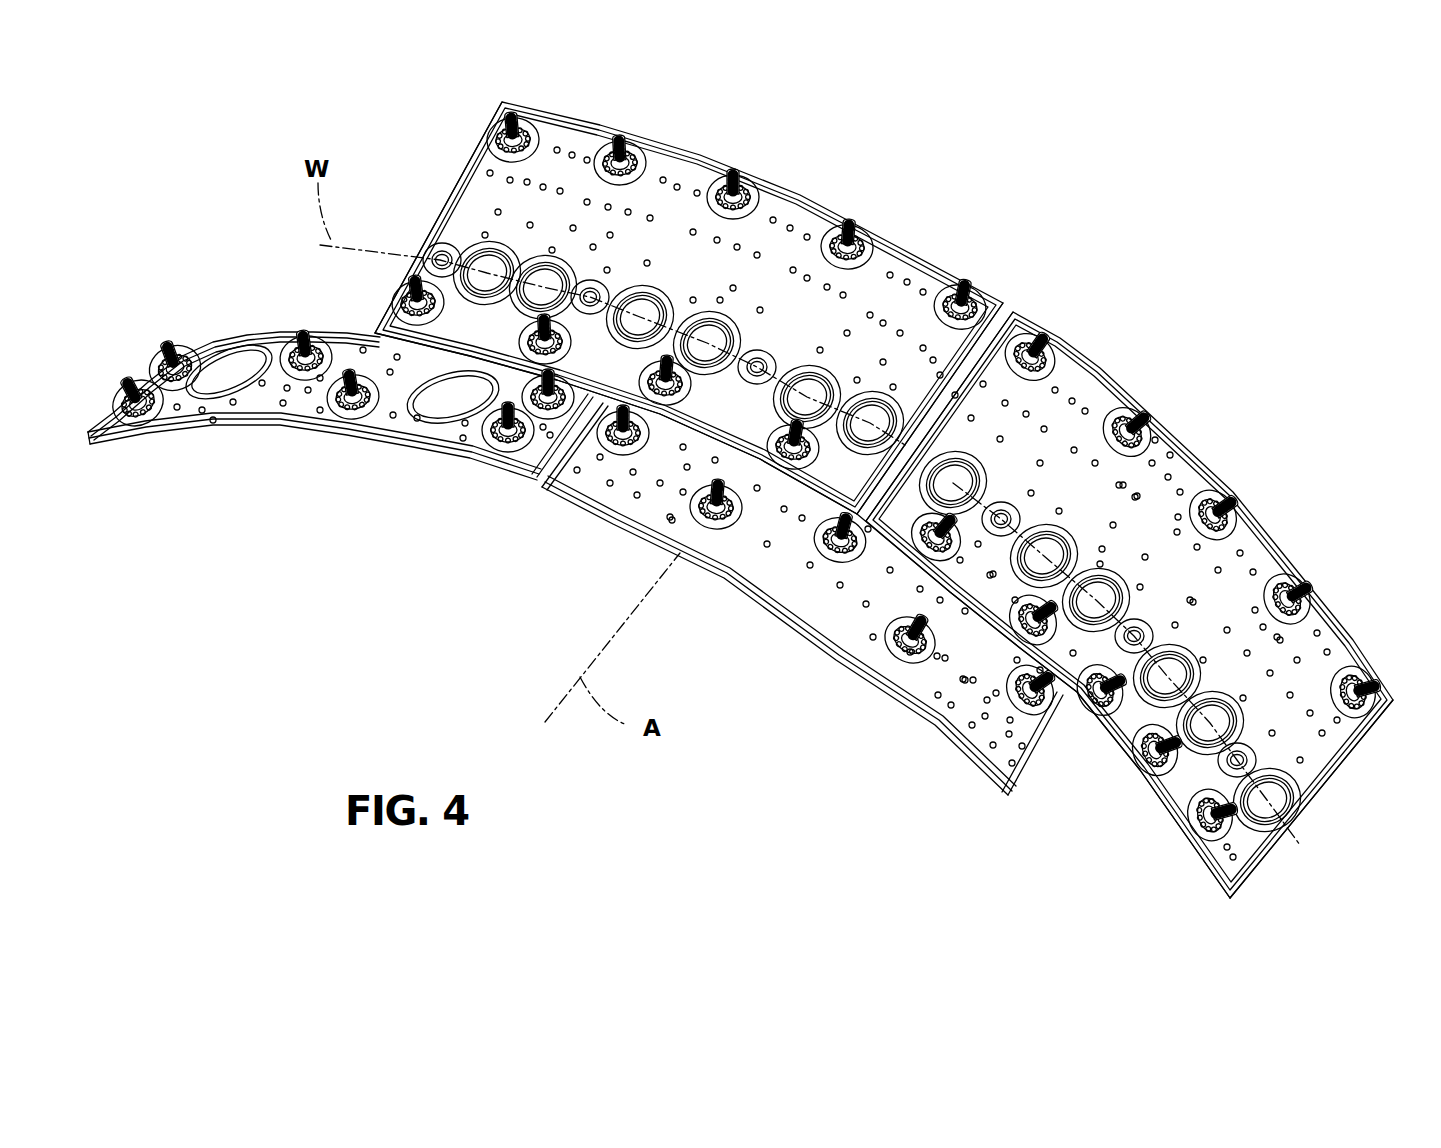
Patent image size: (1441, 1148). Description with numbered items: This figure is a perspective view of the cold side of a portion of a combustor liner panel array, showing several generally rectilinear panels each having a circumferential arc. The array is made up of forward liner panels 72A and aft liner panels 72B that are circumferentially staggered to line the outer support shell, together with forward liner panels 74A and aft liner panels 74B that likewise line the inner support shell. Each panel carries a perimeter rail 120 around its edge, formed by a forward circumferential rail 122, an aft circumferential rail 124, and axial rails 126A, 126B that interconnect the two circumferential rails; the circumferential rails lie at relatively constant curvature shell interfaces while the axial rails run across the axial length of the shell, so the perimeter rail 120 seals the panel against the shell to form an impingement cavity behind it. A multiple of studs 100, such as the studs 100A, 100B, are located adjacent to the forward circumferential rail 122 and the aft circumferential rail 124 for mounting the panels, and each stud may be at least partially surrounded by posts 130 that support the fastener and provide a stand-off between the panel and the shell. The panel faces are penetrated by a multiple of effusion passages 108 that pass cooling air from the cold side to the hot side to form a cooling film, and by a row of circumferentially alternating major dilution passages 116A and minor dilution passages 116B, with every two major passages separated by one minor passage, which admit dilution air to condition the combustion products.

The forward liner panel 72A is at (587, 613).
The forward liner panel 74A is at (587, 613).
The aft liner panel 72B is at (875, 498).
The aft liner panel 74B is at (875, 498).
The stud 100 is at (727, 553).
The stud 100A is at (1253, 835).
The stud 100B is at (1360, 690).
The effusion passage 108 is at (1165, 518).
The major dilution passage 116A is at (1074, 578).
The minor dilution passage 116B is at (1140, 627).
The perimeter rail 120 is at (1366, 736).
The forward circumferential rail 122 is at (722, 438).
The aft circumferential rail 124 is at (806, 196).
The axial rail 126A is at (975, 340).
The axial rail 126B is at (476, 153).
The post 130 is at (1222, 840).